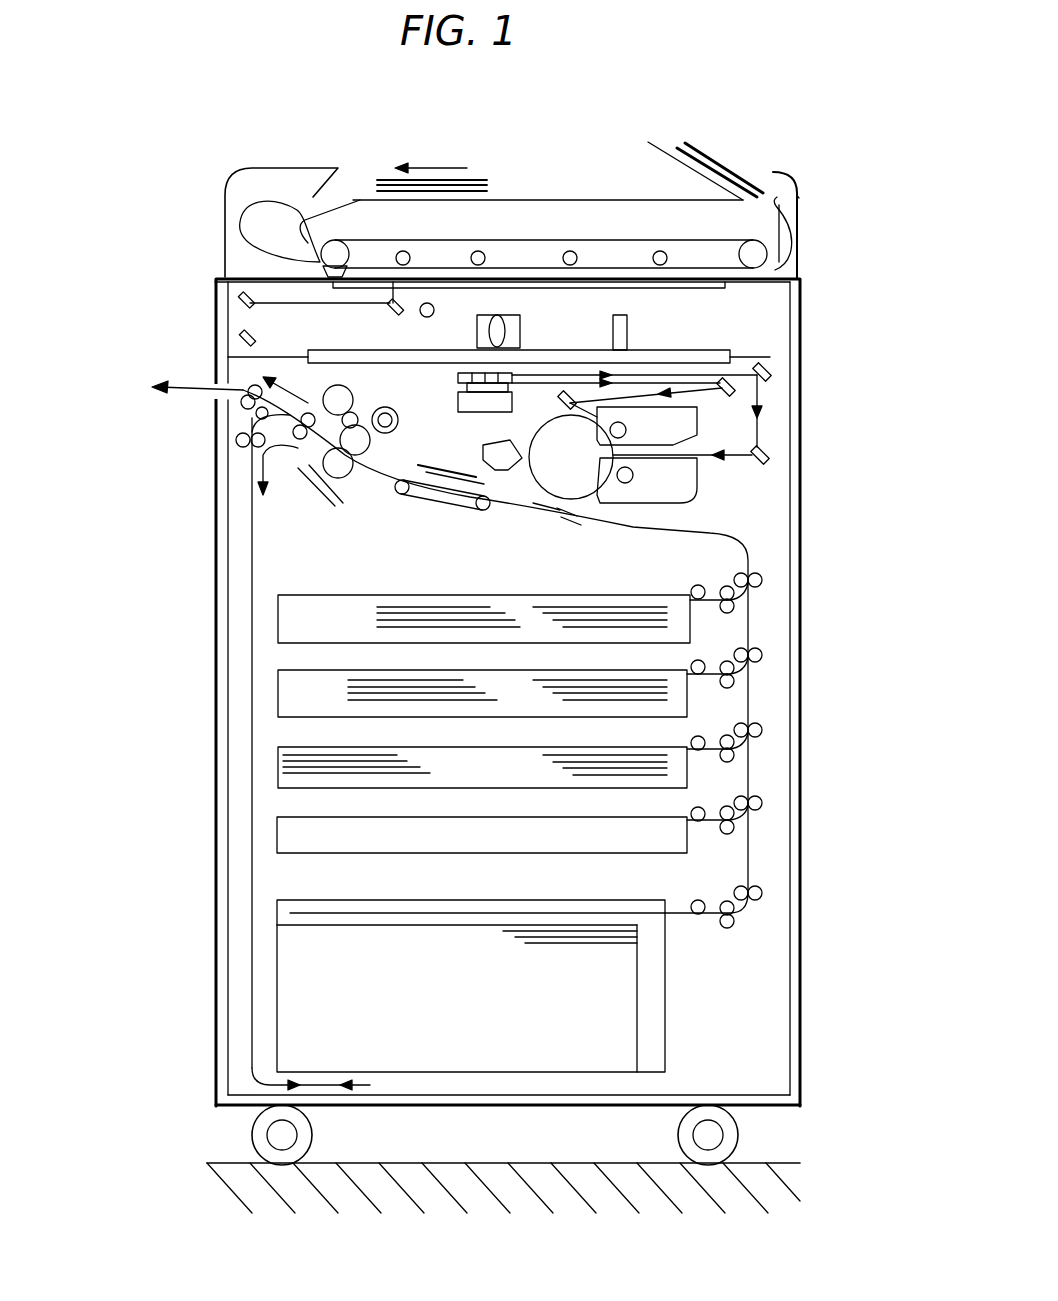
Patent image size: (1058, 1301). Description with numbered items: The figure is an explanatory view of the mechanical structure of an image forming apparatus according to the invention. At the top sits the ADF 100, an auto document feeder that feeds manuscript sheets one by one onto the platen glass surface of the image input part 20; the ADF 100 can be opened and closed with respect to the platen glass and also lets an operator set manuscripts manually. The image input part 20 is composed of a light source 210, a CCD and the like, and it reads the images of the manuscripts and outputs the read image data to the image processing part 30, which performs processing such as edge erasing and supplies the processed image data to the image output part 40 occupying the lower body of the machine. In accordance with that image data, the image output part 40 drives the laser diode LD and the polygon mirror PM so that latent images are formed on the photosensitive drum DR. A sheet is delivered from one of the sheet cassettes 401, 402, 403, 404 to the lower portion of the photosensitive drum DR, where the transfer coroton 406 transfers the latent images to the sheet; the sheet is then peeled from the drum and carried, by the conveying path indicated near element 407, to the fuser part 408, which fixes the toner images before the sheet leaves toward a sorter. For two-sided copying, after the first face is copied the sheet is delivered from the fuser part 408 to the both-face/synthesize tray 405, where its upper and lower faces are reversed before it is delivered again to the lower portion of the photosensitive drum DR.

The ADF (Auto Document Feeder) 100 is at (560, 172).
The light source 210 is at (430, 303).
The image input part 20 is at (827, 283).
The image processing part 30 is at (700, 347).
The image output part 40 is at (827, 367).
The sheet cassette 401 is at (318, 592).
The sheet cassette 402 is at (287, 670).
The sheet cassette 403 is at (288, 746).
The sheet cassette 404 is at (290, 899).
The both-face/synthesize tray 405 is at (290, 816).
The transfer coroton 406 is at (568, 524).
The conveying belt 407 is at (542, 512).
The fuser part 408 is at (375, 460).
The polygon mirror PM is at (458, 380).
The laser diode LD is at (457, 411).
The photosensitive drum DR is at (571, 457).